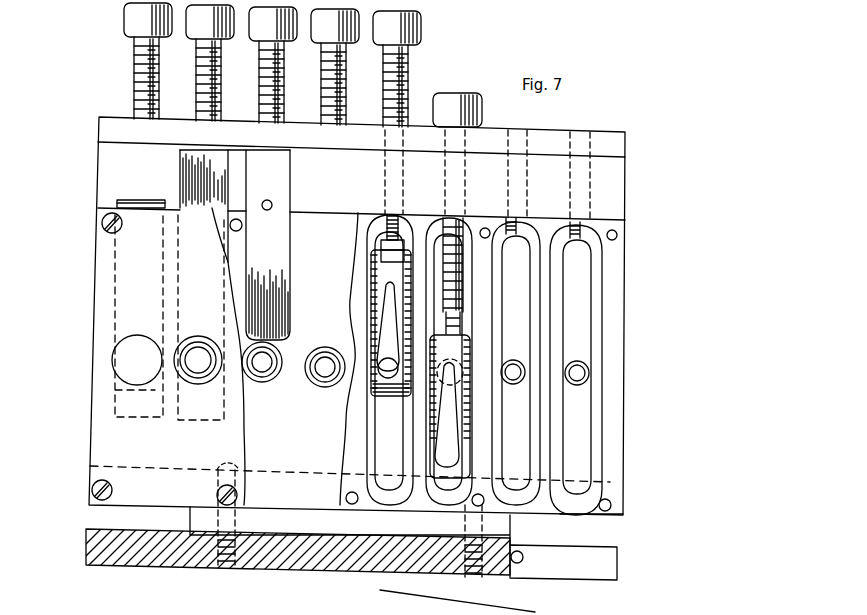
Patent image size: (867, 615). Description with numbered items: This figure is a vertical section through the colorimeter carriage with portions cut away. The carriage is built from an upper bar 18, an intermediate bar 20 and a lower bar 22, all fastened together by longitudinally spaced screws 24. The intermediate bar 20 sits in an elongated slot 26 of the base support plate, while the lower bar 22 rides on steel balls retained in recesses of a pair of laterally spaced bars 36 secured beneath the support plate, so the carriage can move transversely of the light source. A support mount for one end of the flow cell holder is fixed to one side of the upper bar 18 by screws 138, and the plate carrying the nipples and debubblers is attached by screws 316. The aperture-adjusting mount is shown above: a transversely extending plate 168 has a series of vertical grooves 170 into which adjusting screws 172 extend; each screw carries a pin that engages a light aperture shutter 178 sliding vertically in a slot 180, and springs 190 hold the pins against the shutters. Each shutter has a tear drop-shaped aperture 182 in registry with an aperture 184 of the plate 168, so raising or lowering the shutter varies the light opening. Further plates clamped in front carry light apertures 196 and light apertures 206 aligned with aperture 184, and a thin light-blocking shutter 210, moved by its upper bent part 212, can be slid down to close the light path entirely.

The upper bar 18 is at (298, 470).
The intermediate bar 20 is at (190, 520).
The lower bar 22 is at (276, 572).
The screws 24 is at (495, 573).
The elongated slot 26 is at (610, 524).
The laterally spaced bars 36 is at (617, 547).
The screws 138 is at (92, 492).
The transversely extending plate 168 is at (628, 308).
The vertical grooves 170 is at (580, 333).
The adjusting screws 172 is at (422, 23).
The light aperture shutter 178 is at (113, 410).
The slot 180 is at (595, 408).
The tear drop-shaped aperture 182 is at (386, 322).
The aperture 184 is at (580, 375).
The springs 190 is at (385, 240).
The light apertures 196 is at (193, 370).
The light apertures 206 is at (118, 368).
The light-blocking shutter 210 is at (290, 188).
The upper bent part 212 is at (288, 150).
The screws 316 is at (102, 222).